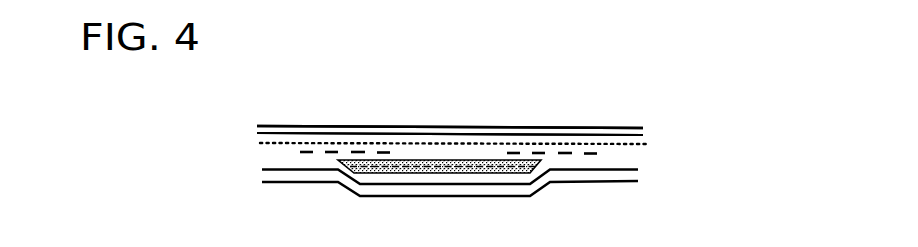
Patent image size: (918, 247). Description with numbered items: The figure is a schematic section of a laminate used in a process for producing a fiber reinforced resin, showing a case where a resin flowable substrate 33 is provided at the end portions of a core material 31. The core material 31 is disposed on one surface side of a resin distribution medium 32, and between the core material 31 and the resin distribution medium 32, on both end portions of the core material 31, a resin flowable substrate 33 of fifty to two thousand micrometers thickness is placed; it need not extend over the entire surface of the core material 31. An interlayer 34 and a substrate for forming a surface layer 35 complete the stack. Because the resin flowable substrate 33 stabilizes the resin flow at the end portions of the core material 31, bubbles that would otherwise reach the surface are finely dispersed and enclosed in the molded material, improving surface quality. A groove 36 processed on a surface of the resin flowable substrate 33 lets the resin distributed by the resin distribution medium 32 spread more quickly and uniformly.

The core material 31 is at (447, 171).
The resin distribution medium 32 is at (400, 132).
The resin flowable substrate 33 is at (360, 151).
The interlayer 34 is at (288, 161).
The substrate for forming a surface layer 35 is at (457, 123).
The groove 36 is at (485, 163).